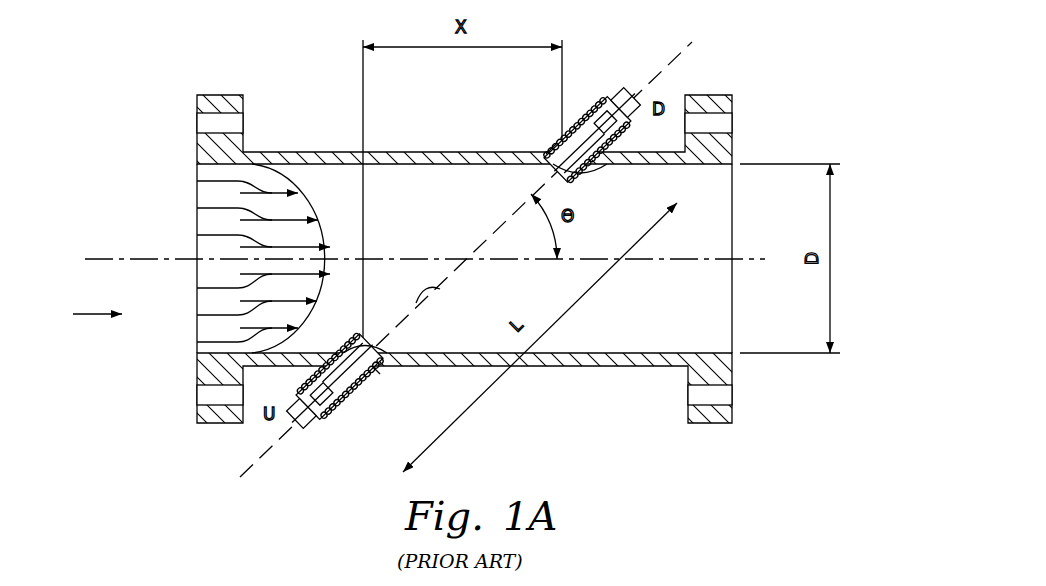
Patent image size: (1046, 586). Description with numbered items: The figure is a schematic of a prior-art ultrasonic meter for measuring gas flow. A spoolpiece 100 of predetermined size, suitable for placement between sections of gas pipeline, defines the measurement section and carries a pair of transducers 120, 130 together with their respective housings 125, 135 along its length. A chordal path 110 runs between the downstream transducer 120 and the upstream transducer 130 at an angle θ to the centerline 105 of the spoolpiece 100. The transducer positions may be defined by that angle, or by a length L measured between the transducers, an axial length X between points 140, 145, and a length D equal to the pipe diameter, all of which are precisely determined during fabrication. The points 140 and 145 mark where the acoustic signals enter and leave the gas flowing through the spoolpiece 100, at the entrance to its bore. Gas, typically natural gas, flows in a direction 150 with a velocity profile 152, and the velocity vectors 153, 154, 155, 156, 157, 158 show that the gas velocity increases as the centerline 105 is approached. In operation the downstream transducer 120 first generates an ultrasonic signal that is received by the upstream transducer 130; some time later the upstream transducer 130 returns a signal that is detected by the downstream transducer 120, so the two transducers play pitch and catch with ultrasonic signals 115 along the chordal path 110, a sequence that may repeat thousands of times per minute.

The spoolpiece 100 is at (734, 163).
The centerline 105 is at (759, 258).
The path 110 is at (514, 209).
The ultrasonic signals 115 is at (418, 303).
The downstream transducer 120 is at (612, 96).
The transducer housing 125 is at (558, 144).
The upstream transducer 130 is at (318, 425).
The transducer housing 135 is at (372, 388).
The point 140 is at (568, 170).
The point 145 is at (378, 352).
The flow direction 150 is at (84, 318).
The velocity profile 152 is at (320, 208).
The velocity vector 153 is at (197, 181).
The velocity vector 154 is at (197, 208).
The velocity vector 155 is at (197, 235).
The velocity vector 156 is at (197, 288).
The velocity vector 157 is at (197, 315).
The velocity vector 158 is at (197, 342).